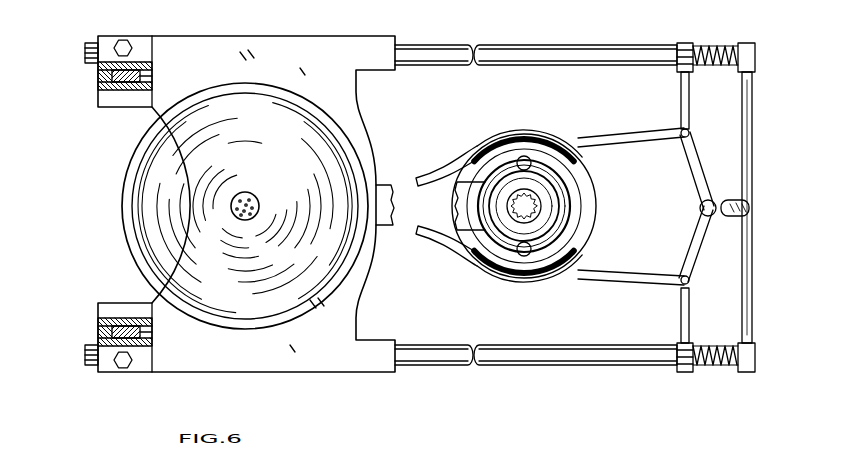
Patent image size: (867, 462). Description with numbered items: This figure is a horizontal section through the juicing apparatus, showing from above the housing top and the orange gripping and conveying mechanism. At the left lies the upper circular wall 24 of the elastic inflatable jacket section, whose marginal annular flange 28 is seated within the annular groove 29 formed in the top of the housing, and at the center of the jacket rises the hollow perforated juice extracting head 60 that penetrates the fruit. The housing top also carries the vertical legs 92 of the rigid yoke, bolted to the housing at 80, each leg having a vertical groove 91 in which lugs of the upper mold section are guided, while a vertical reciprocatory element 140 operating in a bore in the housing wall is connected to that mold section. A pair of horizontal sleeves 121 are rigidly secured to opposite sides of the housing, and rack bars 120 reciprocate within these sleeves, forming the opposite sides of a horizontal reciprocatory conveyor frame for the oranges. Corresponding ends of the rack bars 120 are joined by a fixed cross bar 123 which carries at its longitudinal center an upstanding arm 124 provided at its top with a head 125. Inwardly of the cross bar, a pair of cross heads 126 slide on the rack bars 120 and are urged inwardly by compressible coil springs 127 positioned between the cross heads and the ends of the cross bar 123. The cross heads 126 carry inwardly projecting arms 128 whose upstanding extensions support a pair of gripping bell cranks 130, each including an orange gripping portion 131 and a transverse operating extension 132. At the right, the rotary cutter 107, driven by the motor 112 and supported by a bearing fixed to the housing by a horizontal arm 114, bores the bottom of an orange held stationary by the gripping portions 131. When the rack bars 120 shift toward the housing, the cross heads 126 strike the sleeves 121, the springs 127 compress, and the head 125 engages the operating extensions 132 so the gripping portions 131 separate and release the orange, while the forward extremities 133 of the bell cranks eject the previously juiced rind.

The horizontal sleeves 121 is at (391, 40).
The rack bars 120 is at (490, 45).
The cross heads 126 is at (680, 44).
The compressible coil springs 127 is at (729, 48).
The cross bar 123 is at (752, 285).
The inwardly projecting arms 128 is at (680, 98).
The gripping bell cranks 130 is at (622, 121).
The transverse operating extensions 132 is at (692, 192).
The head 125 is at (720, 200).
The upstanding arm 124 is at (738, 219).
The motor 112 is at (596, 239).
The rotary boring device or cutter 107 is at (538, 213).
The orange gripping portions 131 is at (503, 140).
The forward extremities 133 is at (420, 226).
The upper circular wall 24 is at (278, 173).
The annular flange 28 is at (140, 250).
The annular groove 29 is at (134, 276).
The juice extracting head 60 is at (262, 200).
The horizontal arm 114 is at (386, 226).
The vertical legs 92 is at (98, 80).
The vertical reciprocatory element 140 is at (98, 97).
The vertical grooves 91 is at (141, 77).
The securing means 80 is at (124, 369).